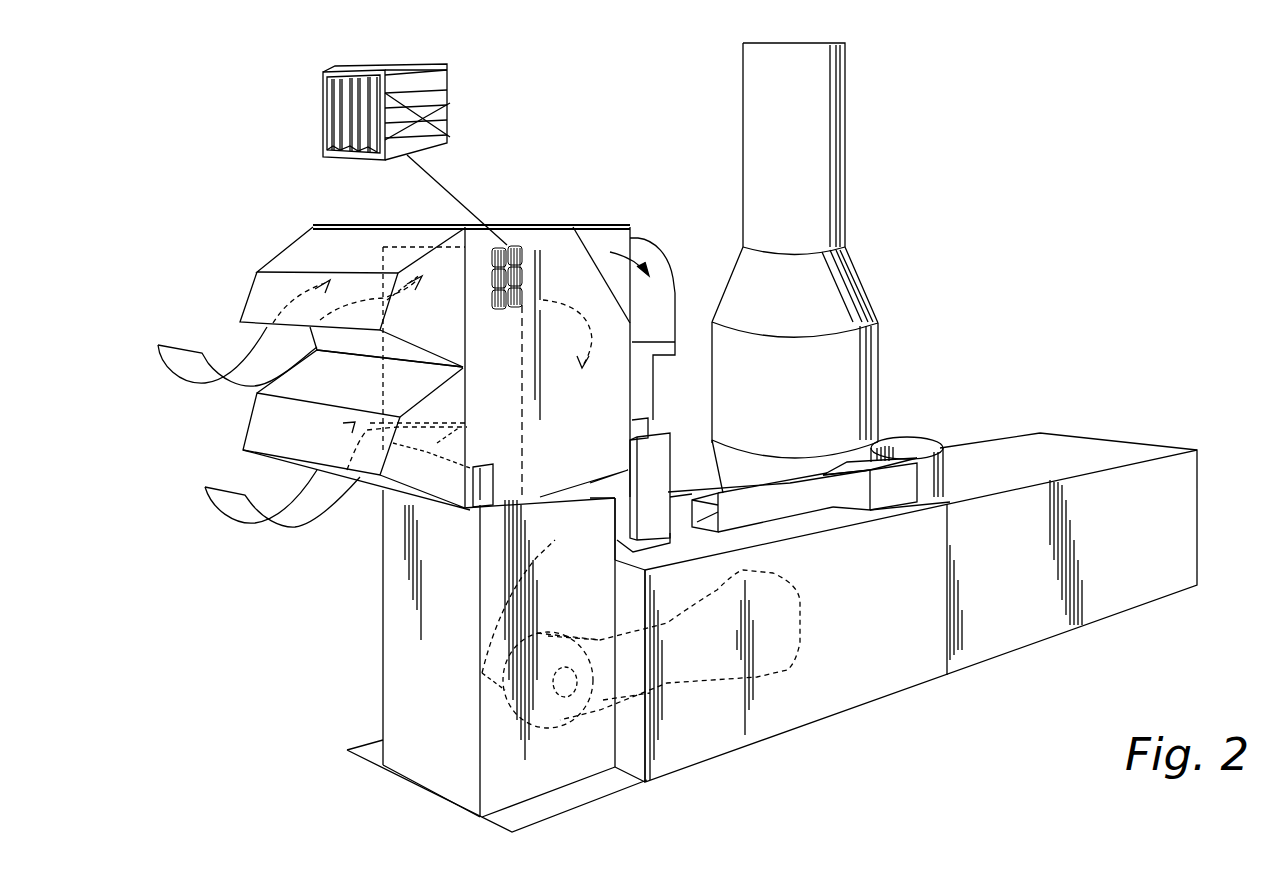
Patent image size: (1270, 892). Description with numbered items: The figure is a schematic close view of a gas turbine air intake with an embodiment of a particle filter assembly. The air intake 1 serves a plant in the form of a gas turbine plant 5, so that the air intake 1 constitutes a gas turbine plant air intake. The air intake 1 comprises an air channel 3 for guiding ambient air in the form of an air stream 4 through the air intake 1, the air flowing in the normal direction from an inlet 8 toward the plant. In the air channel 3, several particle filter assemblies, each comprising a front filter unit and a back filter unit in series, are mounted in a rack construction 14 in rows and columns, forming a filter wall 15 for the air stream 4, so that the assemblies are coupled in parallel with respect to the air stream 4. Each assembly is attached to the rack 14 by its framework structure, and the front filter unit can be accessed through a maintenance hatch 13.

The air intake 1 is at (255, 200).
The air channel 3 is at (480, 282).
The air stream 4 is at (307, 513).
The gas turbine plant 5 is at (856, 731).
The inlet 8 is at (383, 490).
The maintenance hatch 13 is at (482, 500).
The rack construction 14 is at (527, 268).
The filter wall 15 is at (515, 399).